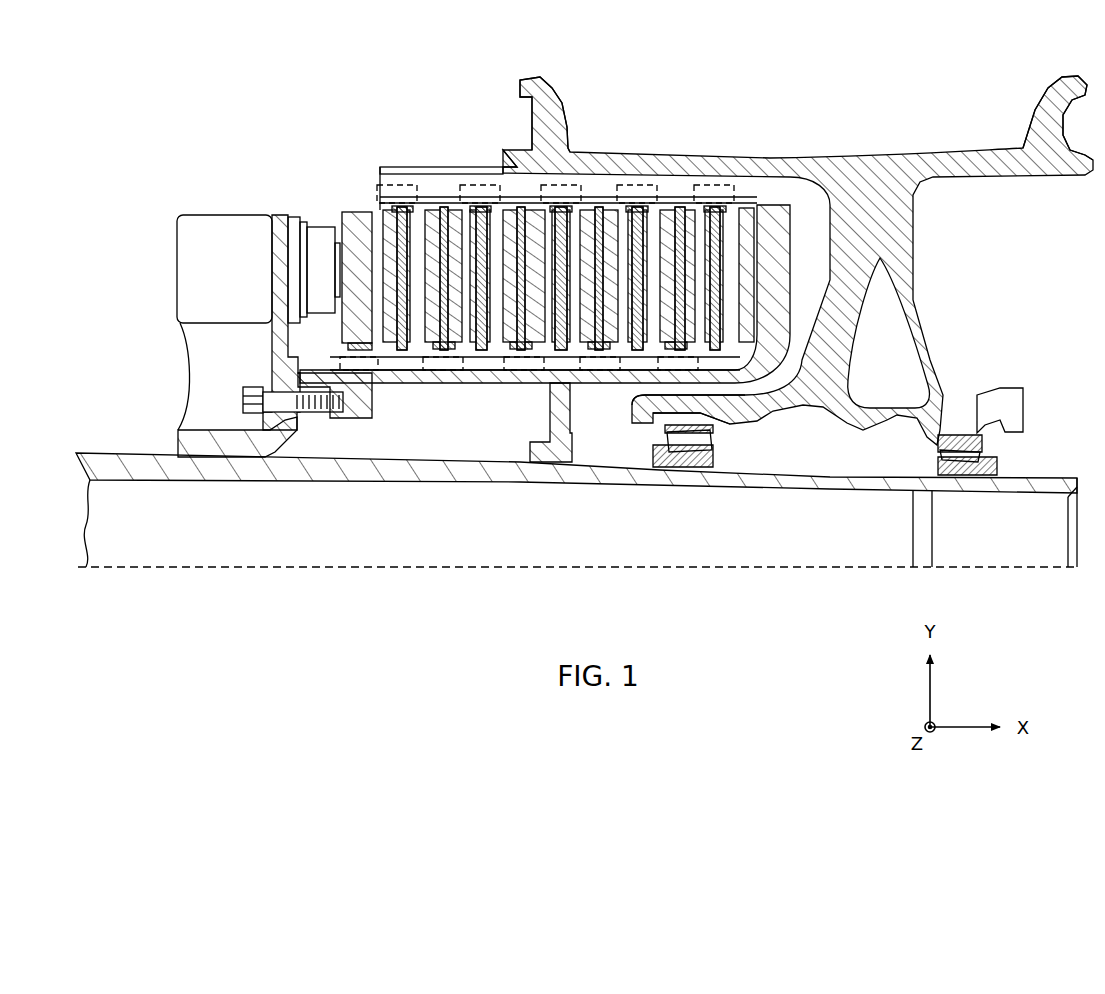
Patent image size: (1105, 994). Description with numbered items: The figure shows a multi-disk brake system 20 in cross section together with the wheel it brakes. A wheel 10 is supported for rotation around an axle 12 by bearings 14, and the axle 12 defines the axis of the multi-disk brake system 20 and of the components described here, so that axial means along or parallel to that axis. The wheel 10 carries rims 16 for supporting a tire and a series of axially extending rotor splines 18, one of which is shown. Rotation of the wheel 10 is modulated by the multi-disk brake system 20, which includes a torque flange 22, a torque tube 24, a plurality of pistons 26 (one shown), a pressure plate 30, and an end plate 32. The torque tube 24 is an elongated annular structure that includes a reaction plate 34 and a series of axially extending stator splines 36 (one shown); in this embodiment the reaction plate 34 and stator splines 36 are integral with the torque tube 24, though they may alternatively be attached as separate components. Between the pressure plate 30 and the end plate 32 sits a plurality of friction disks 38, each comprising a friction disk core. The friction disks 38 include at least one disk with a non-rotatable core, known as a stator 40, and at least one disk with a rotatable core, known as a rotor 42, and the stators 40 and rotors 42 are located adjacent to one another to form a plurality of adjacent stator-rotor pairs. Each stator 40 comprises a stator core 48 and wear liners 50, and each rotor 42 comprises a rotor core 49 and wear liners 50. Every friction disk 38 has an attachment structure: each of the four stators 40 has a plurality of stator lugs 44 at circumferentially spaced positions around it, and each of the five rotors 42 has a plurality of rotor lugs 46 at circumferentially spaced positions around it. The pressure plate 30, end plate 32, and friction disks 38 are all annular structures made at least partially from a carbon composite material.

The wheel 10 is at (920, 140).
The axle 12 is at (835, 477).
The bearings 14 is at (700, 447).
The rims 16 is at (562, 90).
The rotor splines 18 is at (515, 165).
The multi-disk brake system 20 is at (273, 120).
The torque flange 22 is at (277, 370).
The torque tube 24 is at (440, 378).
The pistons 26 is at (318, 228).
The pressure plate 30 is at (346, 212).
The end plate 32 is at (752, 205).
The reaction plate 34 is at (795, 320).
The stator splines 36 is at (490, 367).
The friction disks 38 is at (375, 200).
The stator 40 is at (448, 362).
The rotor 42 is at (400, 203).
The stator lugs 44 is at (652, 365).
The rotor lugs 46 is at (580, 187).
The stator core 48 is at (738, 226).
The rotor core 49 is at (718, 268).
The wear liners 50 is at (667, 210).